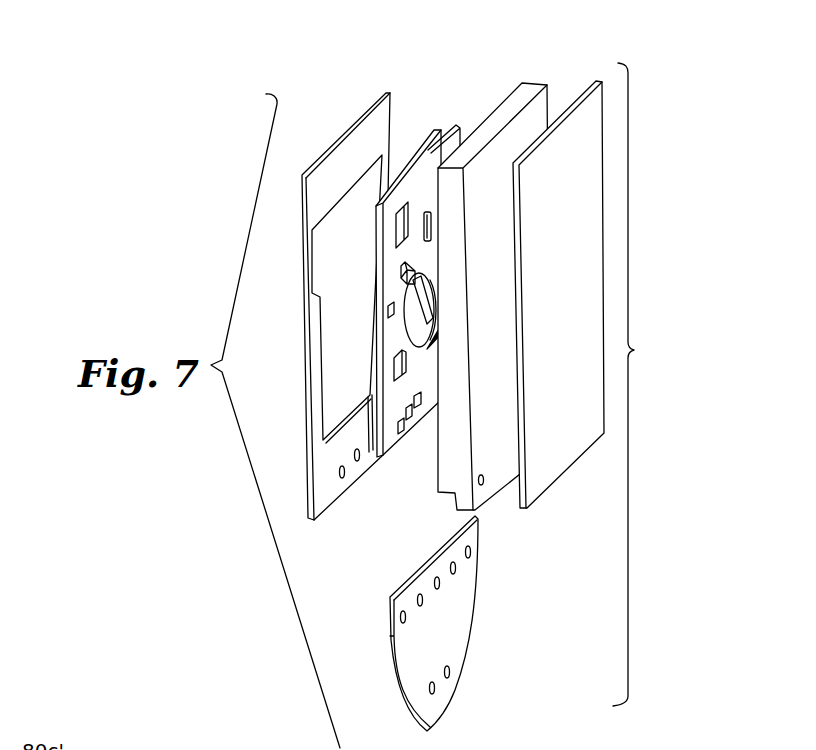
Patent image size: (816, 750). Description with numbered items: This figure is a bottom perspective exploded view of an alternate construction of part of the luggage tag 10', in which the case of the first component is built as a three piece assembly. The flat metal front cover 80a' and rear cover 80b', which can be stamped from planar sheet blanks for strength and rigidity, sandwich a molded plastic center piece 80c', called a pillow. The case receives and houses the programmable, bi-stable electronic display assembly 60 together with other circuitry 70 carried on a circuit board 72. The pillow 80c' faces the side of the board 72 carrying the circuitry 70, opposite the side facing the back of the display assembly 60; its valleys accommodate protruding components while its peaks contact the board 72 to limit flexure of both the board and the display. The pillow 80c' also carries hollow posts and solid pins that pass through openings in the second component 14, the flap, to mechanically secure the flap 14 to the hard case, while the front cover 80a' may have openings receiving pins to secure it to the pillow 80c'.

The luggage tag 10' is at (648, 384).
The second component 14 is at (420, 573).
The electronic display assembly 60 is at (408, 186).
The circuitry 70 is at (412, 186).
The circuit board 72 is at (460, 133).
The front cover 80a' is at (315, 286).
The rear cover 80b' is at (598, 269).
The pillow 80c' is at (518, 260).